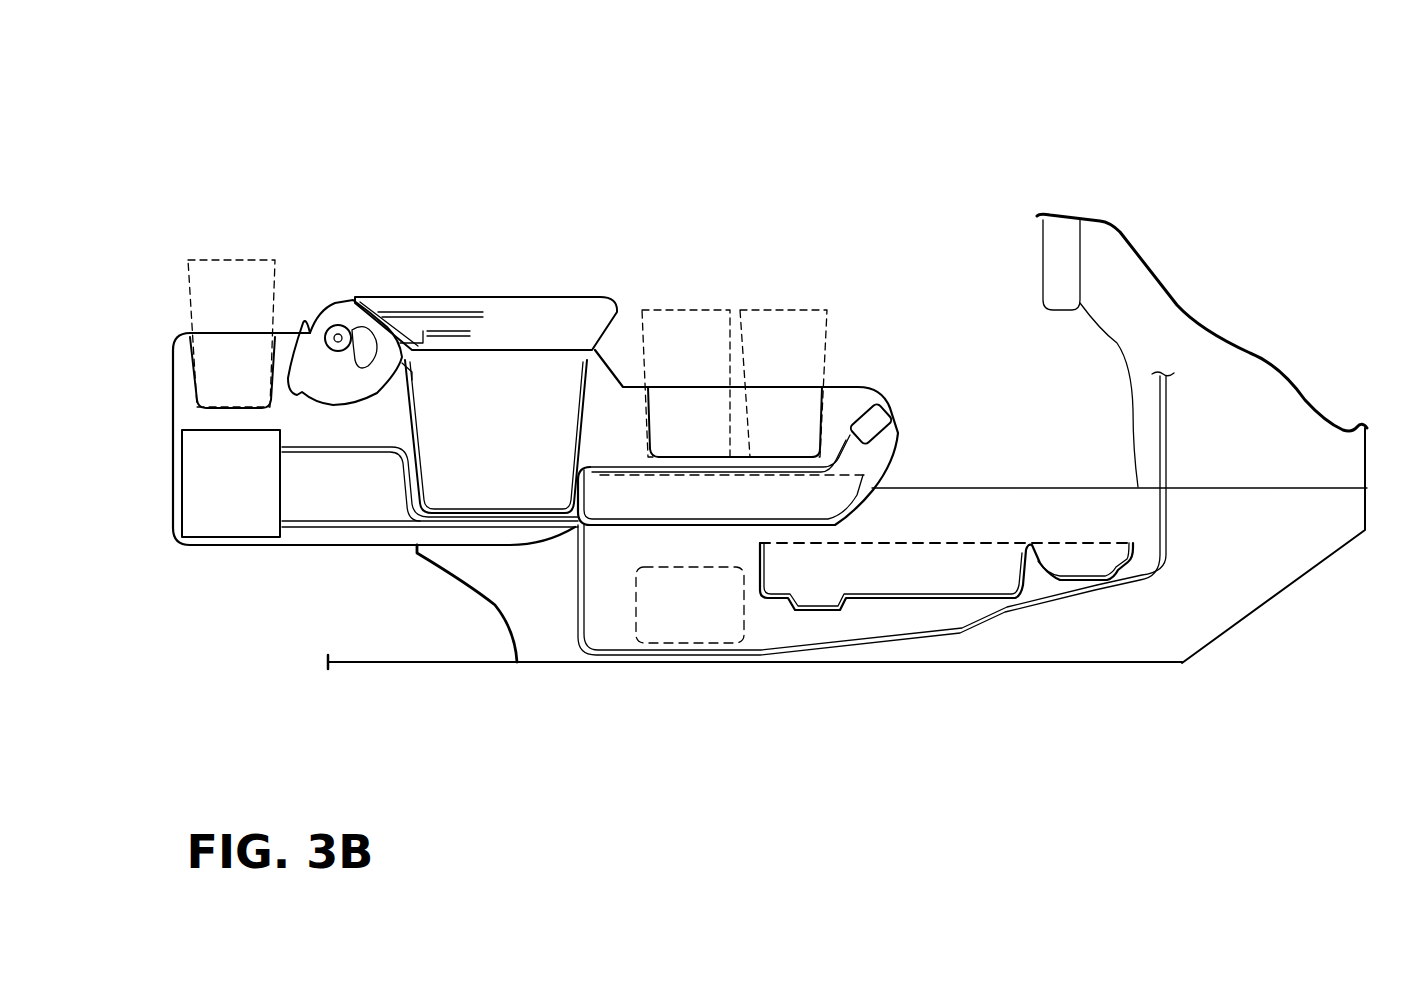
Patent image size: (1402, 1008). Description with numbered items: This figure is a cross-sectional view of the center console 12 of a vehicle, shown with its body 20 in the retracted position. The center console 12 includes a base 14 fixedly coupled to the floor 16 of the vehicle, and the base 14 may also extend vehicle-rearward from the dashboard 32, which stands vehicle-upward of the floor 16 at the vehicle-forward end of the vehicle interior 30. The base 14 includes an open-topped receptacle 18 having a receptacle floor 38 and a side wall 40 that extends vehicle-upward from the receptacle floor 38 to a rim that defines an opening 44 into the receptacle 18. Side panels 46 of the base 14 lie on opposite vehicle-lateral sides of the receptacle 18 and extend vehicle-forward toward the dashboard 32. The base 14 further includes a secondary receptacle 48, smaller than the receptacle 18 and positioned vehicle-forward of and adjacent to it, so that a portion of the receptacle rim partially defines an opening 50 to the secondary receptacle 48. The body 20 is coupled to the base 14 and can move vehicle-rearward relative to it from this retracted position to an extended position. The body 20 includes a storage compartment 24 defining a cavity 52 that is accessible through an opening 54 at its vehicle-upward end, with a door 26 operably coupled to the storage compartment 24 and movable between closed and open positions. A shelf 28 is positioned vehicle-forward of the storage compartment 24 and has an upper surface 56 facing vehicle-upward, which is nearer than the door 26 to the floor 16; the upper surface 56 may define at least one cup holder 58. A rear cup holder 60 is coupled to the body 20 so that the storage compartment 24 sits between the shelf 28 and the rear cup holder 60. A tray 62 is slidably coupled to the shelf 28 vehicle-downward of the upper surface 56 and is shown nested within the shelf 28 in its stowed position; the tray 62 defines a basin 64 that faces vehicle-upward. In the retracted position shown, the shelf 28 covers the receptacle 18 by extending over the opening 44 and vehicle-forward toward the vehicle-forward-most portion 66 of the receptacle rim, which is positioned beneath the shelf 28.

The center console 12 is at (702, 178).
The base 14 is at (505, 630).
The floor 16 is at (370, 662).
The receptacle 18 is at (870, 573).
The body 20 is at (172, 417).
The storage compartment 24 is at (532, 452).
The door 26 is at (450, 295).
The shelf 28 is at (731, 387).
The vehicle interior 30 is at (1005, 160).
The dashboard 32 is at (1030, 240).
The receptacle floor 38 is at (925, 592).
The side wall 40 is at (770, 572).
The opening 44 is at (970, 543).
The side panels 46 is at (1220, 600).
The secondary receptacle 48 is at (1123, 540).
The opening 50 is at (1097, 542).
The cavity 52 is at (548, 345).
The opening 54 is at (520, 377).
The upper surface 56 is at (790, 413).
The cup holder 58 is at (677, 417).
The rear cup holder 60 is at (230, 352).
The tray 62 is at (765, 502).
The basin 64 is at (806, 504).
The vehicle-forward-most portion 66 is at (1040, 548).